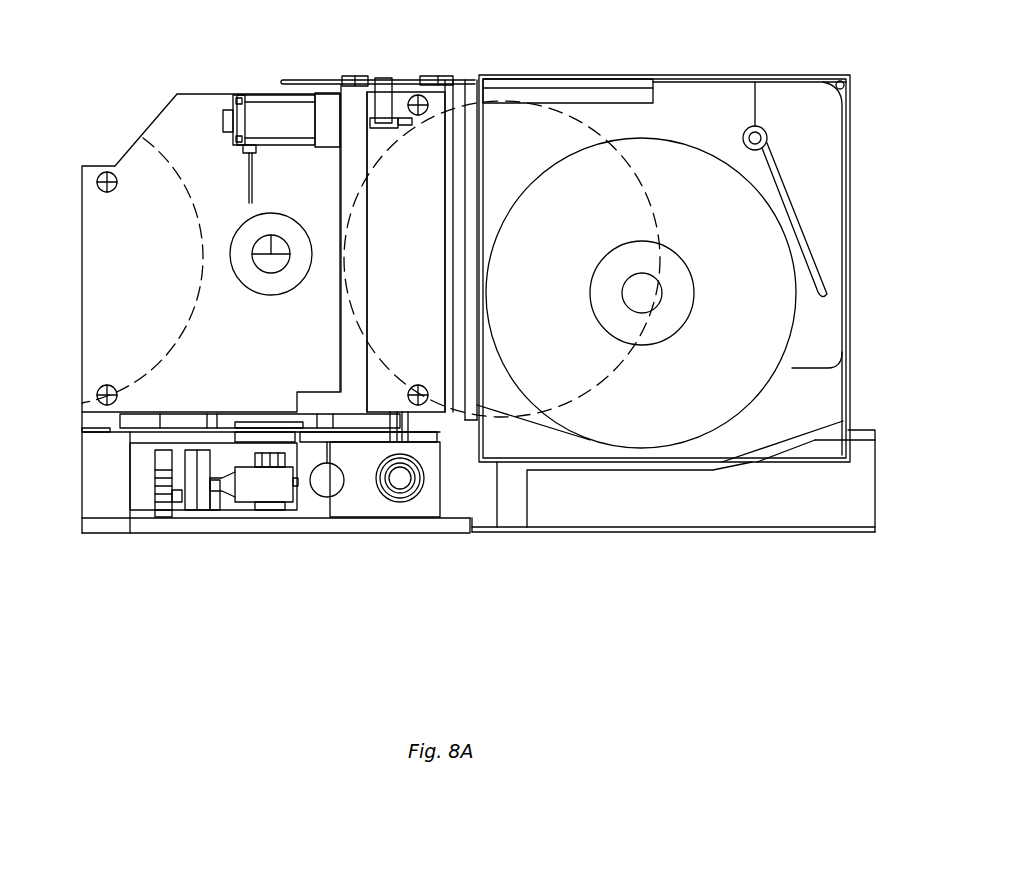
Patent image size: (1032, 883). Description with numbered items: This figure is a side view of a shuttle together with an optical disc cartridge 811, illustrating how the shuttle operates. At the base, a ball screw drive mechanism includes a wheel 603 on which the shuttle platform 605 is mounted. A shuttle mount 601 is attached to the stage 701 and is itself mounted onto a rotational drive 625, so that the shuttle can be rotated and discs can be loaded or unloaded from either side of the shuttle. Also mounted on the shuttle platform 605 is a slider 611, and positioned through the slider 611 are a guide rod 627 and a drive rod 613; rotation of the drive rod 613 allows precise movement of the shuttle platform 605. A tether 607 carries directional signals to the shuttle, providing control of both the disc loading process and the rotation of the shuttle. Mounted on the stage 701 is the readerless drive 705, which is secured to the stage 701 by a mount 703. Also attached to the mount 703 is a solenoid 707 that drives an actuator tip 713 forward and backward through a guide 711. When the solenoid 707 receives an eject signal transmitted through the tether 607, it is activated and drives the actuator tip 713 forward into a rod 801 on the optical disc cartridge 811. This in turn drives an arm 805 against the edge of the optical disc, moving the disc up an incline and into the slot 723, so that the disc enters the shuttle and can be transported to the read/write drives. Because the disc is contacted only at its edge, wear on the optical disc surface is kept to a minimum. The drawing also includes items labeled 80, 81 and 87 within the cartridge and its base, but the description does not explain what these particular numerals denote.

The readerless drive 705 is at (211, 253).
The solenoid 707 is at (270, 97).
The mount 703 is at (297, 392).
The slot 723 is at (440, 245).
The guide 711 is at (385, 78).
The actuator tip 713 is at (460, 80).
The optical disc cartridge 811 is at (727, 70).
The rod 801 is at (612, 75).
The actuator arm 80 is at (802, 212).
The disc 81 is at (788, 332).
The arm 805 is at (556, 470).
The base 87 is at (876, 488).
The stage 701 is at (120, 422).
The shuttle mount 601 is at (130, 431).
The shuttle platform 605 is at (138, 443).
The wheel 603 is at (163, 518).
The tether 607 is at (217, 510).
The rotational drive 625 is at (265, 512).
The guide rod 627 is at (327, 482).
The slider 611 is at (382, 505).
The drive rod 613 is at (400, 480).